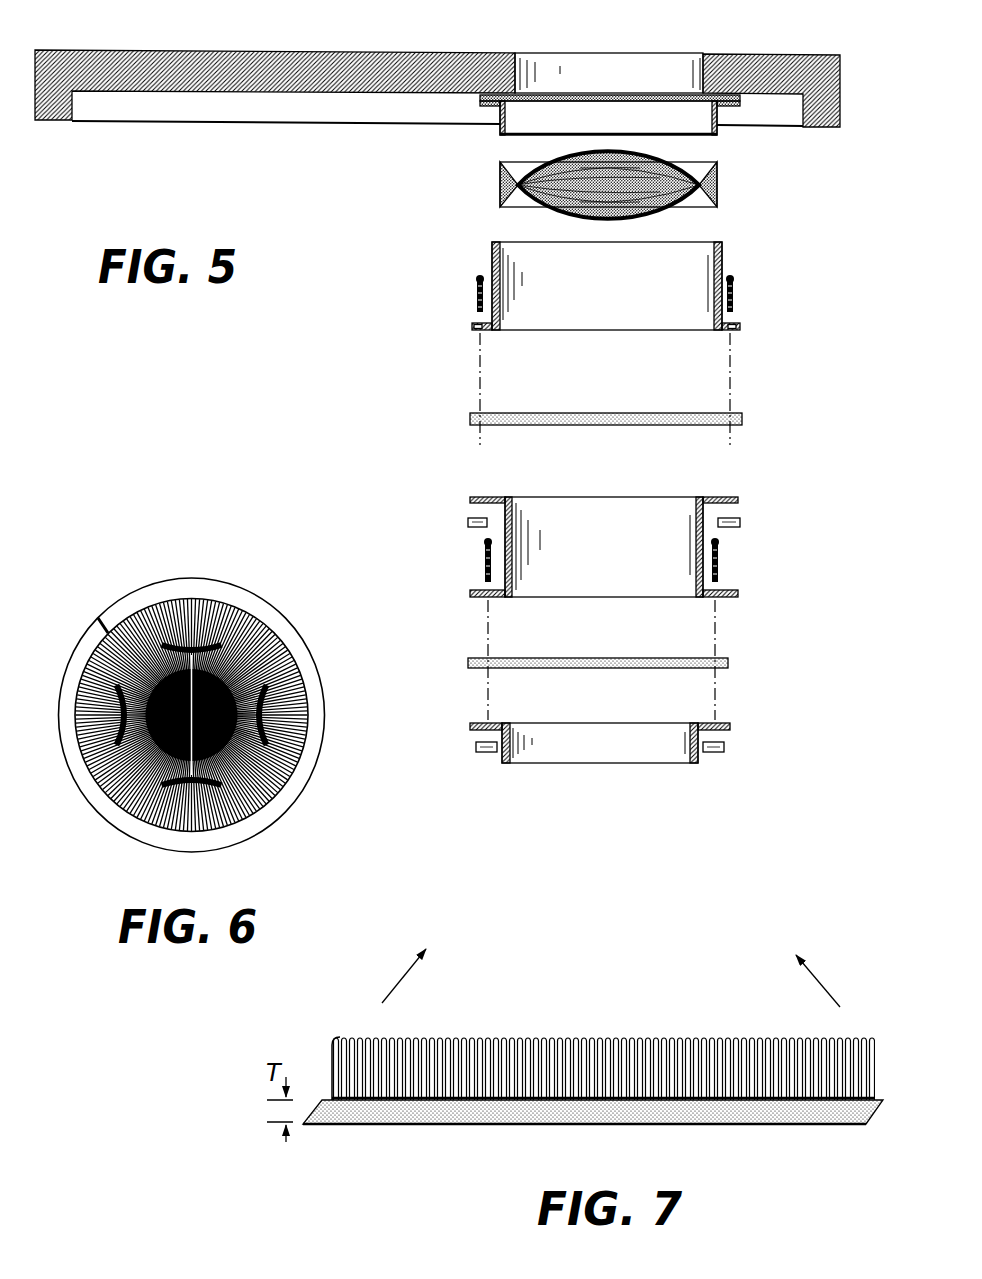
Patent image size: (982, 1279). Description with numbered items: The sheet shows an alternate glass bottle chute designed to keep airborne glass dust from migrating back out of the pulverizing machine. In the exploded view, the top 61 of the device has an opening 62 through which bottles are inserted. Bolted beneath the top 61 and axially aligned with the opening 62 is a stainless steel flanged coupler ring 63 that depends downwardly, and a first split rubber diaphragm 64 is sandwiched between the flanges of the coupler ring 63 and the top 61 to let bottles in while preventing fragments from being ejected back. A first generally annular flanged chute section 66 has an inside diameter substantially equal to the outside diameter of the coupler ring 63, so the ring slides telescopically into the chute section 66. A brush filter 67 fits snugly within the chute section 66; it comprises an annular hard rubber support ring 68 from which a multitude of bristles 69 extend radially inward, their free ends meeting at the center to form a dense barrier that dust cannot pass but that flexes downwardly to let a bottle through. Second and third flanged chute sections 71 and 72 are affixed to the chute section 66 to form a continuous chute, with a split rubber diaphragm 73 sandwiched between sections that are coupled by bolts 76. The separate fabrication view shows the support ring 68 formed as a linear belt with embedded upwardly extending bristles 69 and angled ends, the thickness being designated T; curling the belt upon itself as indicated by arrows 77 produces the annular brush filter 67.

In FIG. 5, the top 61 is at (235, 50).
In FIG. 5, the opening 62 is at (603, 60).
In FIG. 5, the flanged coupler ring 63 is at (690, 136).
In FIG. 5, the first split rubber diaphragm 64 is at (659, 93).
In FIG. 5, the first flanged chute section 66 is at (737, 265).
In FIG. 5, the brush filter 67 is at (636, 175).
In FIG. 6, the brush filter 67 is at (210, 701).
In FIG. 7, the brush filter 67 is at (593, 1066).
In FIG. 5, the support ring 68 is at (500, 174).
In FIG. 6, the support ring 68 is at (233, 587).
In FIG. 7, the support ring 68 is at (510, 1121).
In FIG. 5, the bristles 69 is at (545, 160).
In FIG. 6, the bristles 69 is at (293, 763).
In FIG. 7, the bristles 69 is at (523, 1033).
In FIG. 5, the second flanged chute section 71 is at (746, 549).
In FIG. 5, the third flanged chute section 72 is at (763, 745).
In FIG. 5, the split rubber diaphragm 73 is at (752, 417).
In FIG. 5, the bolts 76 is at (477, 297).
In FIG. 7, the arrows 77 is at (393, 978).